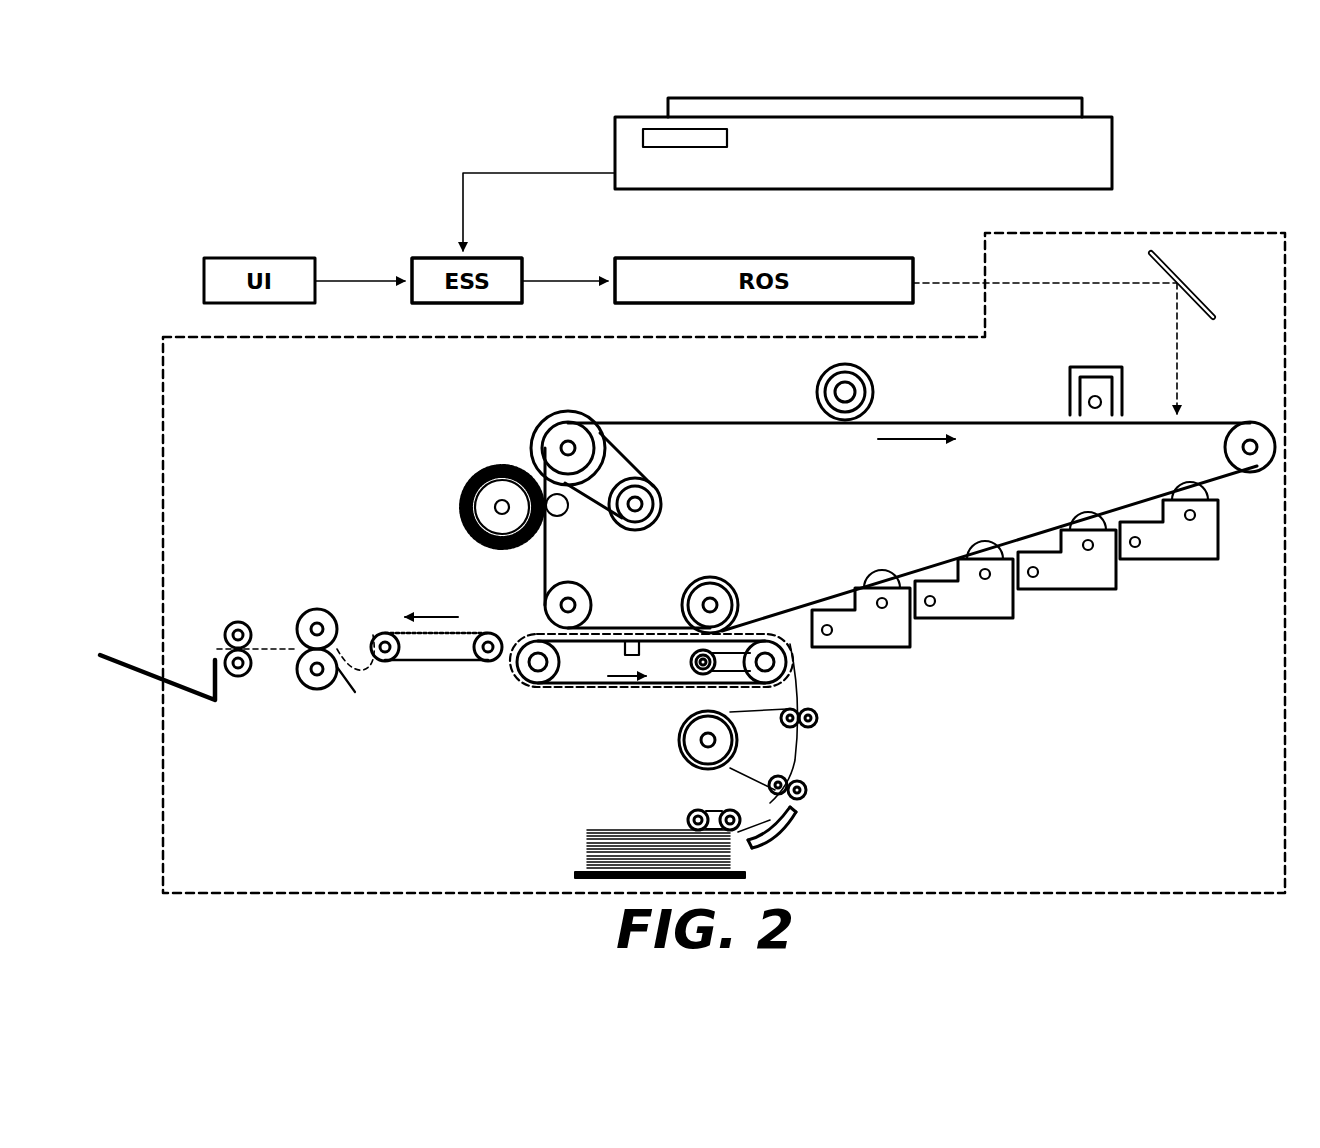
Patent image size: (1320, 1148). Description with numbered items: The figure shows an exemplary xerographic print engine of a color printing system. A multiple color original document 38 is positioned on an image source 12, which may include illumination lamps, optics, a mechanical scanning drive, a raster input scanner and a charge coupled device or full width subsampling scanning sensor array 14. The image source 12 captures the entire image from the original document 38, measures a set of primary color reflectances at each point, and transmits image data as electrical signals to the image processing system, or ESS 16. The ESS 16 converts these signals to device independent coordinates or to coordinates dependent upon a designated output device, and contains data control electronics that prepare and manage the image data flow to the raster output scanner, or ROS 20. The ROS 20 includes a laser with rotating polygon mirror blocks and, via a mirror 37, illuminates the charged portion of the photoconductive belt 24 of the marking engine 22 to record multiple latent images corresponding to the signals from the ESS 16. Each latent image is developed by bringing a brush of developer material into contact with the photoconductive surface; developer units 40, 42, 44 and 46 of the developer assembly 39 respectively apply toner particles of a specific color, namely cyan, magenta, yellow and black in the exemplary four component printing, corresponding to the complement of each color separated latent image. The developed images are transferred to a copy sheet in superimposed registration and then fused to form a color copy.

The image source 12 is at (605, 158).
The full width subsampling scanning sensor array 14 is at (693, 147).
The image processing system (ESS) 16 is at (438, 254).
The raster output scanner (ROS) 20 is at (862, 254).
The marking engine 22 is at (1182, 222).
The photoconductive belt 24 is at (1014, 422).
The mirror 37 is at (1172, 267).
The original document 38 is at (928, 98).
The developer housing assembly 39 is at (1022, 596).
The developer unit 40 is at (1177, 563).
The developer unit 42 is at (1073, 593).
The developer unit 44 is at (977, 622).
The developer unit 46 is at (872, 652).